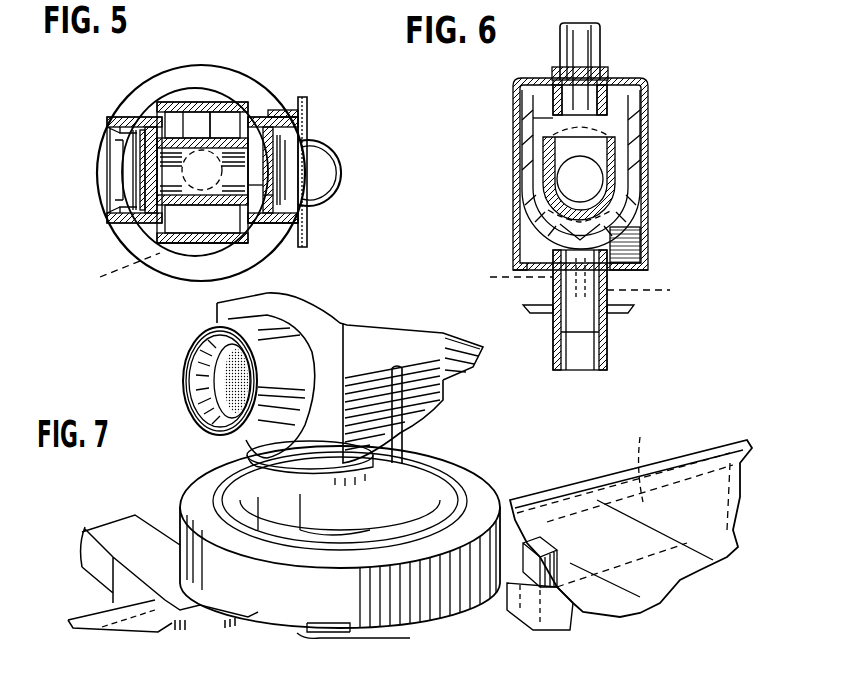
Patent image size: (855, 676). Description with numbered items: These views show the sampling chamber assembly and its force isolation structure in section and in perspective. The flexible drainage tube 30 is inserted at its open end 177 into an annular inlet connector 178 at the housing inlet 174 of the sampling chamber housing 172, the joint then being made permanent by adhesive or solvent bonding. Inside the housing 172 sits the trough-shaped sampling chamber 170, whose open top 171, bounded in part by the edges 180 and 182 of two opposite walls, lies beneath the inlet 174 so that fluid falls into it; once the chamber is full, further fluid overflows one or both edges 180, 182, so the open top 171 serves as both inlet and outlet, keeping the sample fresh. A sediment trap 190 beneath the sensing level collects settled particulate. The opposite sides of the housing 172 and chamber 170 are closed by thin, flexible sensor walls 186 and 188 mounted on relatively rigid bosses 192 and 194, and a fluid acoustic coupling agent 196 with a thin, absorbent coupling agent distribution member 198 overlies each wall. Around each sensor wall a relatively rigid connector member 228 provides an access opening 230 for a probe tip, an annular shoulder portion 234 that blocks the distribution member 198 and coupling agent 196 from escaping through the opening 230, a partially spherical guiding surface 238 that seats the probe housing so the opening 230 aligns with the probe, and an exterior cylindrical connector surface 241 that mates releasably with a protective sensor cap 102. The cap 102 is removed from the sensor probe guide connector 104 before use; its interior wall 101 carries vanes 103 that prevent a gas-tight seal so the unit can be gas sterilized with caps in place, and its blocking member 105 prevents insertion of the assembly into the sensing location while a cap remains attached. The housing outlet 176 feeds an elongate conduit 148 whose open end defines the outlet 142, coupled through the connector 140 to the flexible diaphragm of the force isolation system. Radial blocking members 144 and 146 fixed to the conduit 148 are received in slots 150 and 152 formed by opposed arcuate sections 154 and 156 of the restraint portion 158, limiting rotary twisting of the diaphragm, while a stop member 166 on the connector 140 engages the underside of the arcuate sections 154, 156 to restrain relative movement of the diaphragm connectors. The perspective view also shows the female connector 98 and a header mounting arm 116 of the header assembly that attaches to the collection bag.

In FIG. 6, the drainage tube 30 is at (560, 45).
In FIG. 7, the female connector 98 is at (530, 520).
In FIG. 5, the interior wall 101 is at (302, 220).
In FIG. 5, the sensor cap 102 is at (290, 115).
In FIG. 5, the vanes 103 is at (267, 110).
In FIG. 7, the sensor probe guide connector 104 is at (217, 323).
In FIG. 5, the blocking member 105 is at (336, 152).
In FIG. 7, the header mounting arm 116 is at (660, 462).
In FIG. 6, the connector 140 is at (607, 355).
In FIG. 6, the outlet 142 is at (607, 335).
In FIG. 6, the radial blocking member 144 is at (659, 290).
In FIG. 7, the radial blocking member 144 is at (290, 480).
In FIG. 6, the radial blocking member 146 is at (490, 277).
In FIG. 7, the radial blocking member 146 is at (403, 440).
In FIG. 6, the elongate conduit 148 is at (605, 273).
In FIG. 7, the slot 150 is at (245, 500).
In FIG. 7, the slot 152 is at (413, 487).
In FIG. 7, the arcuate section 154 is at (355, 522).
In FIG. 7, the arcuate section 156 is at (265, 488).
In FIG. 7, the restraint portion 158 is at (480, 477).
In FIG. 6, the stop member 166 is at (530, 307).
In FIG. 7, the stop member 166 is at (270, 500).
In FIG. 5, the sampling chamber 170 is at (180, 187).
In FIG. 6, the sampling chamber 170 is at (573, 180).
In FIG. 5, the open top 171 is at (177, 102).
In FIG. 6, the open top 171 is at (620, 100).
In FIG. 5, the sampling chamber housing 172 is at (150, 115).
In FIG. 6, the sampling chamber housing 172 is at (513, 173).
In FIG. 6, the housing inlet 174 is at (600, 57).
In FIG. 5, the housing outlet 176 is at (100, 277).
In FIG. 6, the housing outlet 176 is at (633, 260).
In FIG. 6, the open end 177 is at (527, 110).
In FIG. 6, the annular inlet connector 178 is at (552, 72).
In FIG. 5, the edge 180 is at (253, 230).
In FIG. 6, the edge 180 is at (640, 117).
In FIG. 5, the edge 182 is at (213, 103).
In FIG. 6, the edge 182 is at (547, 140).
In FIG. 5, the sensor wall 186 is at (105, 133).
In FIG. 5, the sensor wall 188 is at (132, 145).
In FIG. 6, the sensor wall 188 is at (590, 160).
In FIG. 6, the sediment trap 190 is at (607, 213).
In FIG. 5, the boss 192 is at (147, 213).
In FIG. 5, the boss 194 is at (267, 223).
In FIG. 5, the acoustic coupling agent 196 is at (127, 182).
In FIG. 5, the coupling agent distribution member 198 is at (132, 163).
In FIG. 7, the coupling agent distribution member 198 is at (205, 370).
In FIG. 5, the connector member 228 is at (302, 205).
In FIG. 7, the connector member 228 is at (190, 405).
In FIG. 5, the access opening 230 is at (302, 147).
In FIG. 7, the access opening 230 is at (190, 345).
In FIG. 5, the annular shoulder portion 234 is at (307, 182).
In FIG. 5, the guiding surface 238 is at (133, 197).
In FIG. 7, the guiding surface 238 is at (220, 382).
In FIG. 5, the exterior cylindrical connector surface 241 is at (120, 115).